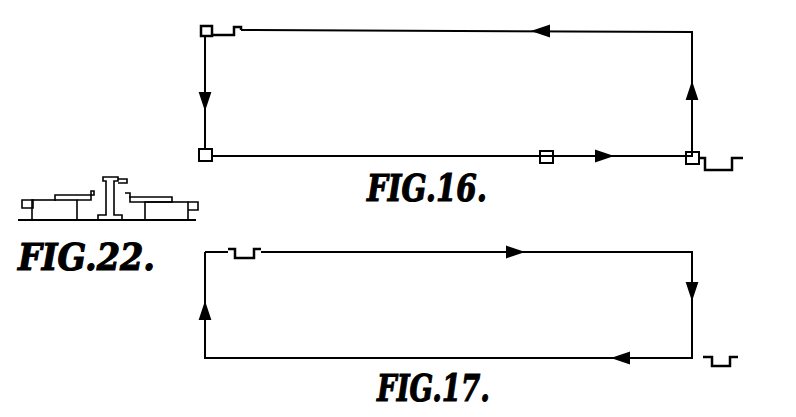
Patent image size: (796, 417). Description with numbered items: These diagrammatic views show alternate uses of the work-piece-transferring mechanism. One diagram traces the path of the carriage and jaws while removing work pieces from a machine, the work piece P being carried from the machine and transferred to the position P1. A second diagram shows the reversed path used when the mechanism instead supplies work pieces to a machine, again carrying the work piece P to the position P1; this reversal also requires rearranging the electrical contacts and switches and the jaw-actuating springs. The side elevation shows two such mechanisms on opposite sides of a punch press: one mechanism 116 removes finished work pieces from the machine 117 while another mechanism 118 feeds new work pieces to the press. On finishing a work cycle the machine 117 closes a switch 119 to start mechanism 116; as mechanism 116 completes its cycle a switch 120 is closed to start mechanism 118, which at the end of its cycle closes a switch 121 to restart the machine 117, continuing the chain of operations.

In FIG. 16, the work piece P is at (748, 146).
In FIG. 17, the work piece P is at (256, 248).
In FIG. 16, the work piece position P1 is at (242, 26).
In FIG. 17, the work piece position P1 is at (729, 355).
In FIG. 22, the work-piece-transferring mechanism 116 is at (180, 200).
In FIG. 22, the machine 117 is at (108, 177).
In FIG. 22, the work-piece-transferring mechanism 118 is at (47, 200).
In FIG. 22, the switch 119 is at (123, 180).
In FIG. 22, the switch 120 is at (199, 205).
In FIG. 22, the switch 121 is at (27, 199).